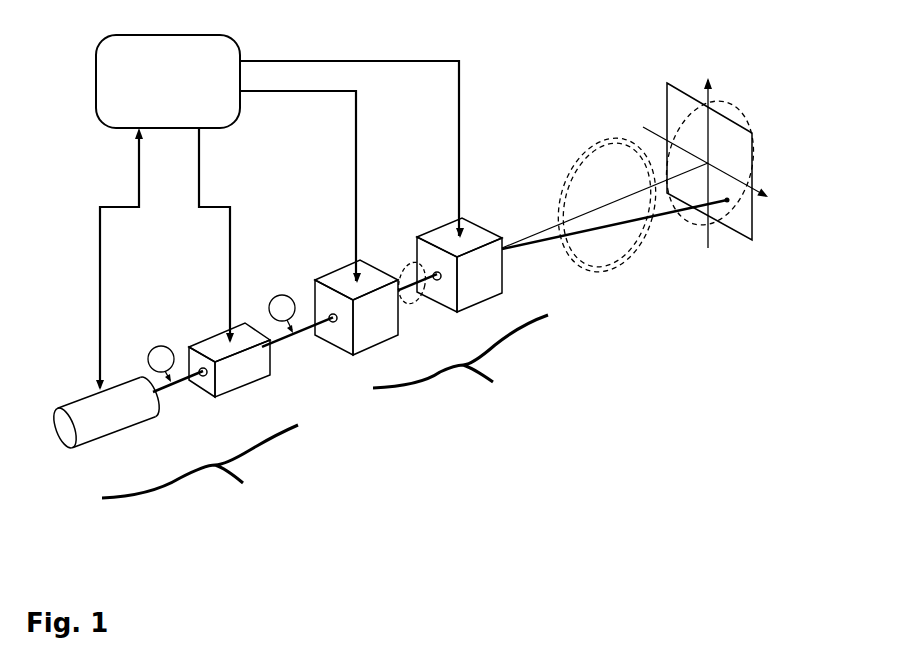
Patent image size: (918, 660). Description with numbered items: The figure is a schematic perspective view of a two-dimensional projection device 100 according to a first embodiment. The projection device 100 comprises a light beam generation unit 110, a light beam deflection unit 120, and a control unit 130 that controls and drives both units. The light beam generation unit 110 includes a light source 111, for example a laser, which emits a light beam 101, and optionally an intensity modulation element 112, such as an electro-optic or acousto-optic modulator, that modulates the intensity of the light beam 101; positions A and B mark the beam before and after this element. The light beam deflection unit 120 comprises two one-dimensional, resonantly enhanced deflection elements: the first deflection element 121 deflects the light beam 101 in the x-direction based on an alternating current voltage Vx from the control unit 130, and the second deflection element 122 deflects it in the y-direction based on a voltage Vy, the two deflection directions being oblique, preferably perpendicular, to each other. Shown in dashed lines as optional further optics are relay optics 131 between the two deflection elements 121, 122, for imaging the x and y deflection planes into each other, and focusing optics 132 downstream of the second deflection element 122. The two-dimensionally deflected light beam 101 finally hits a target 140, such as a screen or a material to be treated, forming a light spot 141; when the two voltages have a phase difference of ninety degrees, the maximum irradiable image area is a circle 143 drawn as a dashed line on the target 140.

The projection device 100 is at (556, 62).
The light beam 101 is at (160, 394).
The light beam generation unit 110 is at (200, 468).
The light source 111 is at (122, 428).
The intensity modulation element 112 is at (257, 379).
The light beam deflection unit 120 is at (460, 361).
The first deflection element 121 is at (387, 343).
The second deflection element 122 is at (492, 298).
The control unit 130 is at (291, 212).
The relay optics 131 is at (423, 303).
The focusing optics 132 is at (635, 268).
The target 140 is at (737, 118).
The light spot 141 is at (727, 202).
The circle 143 is at (742, 150).